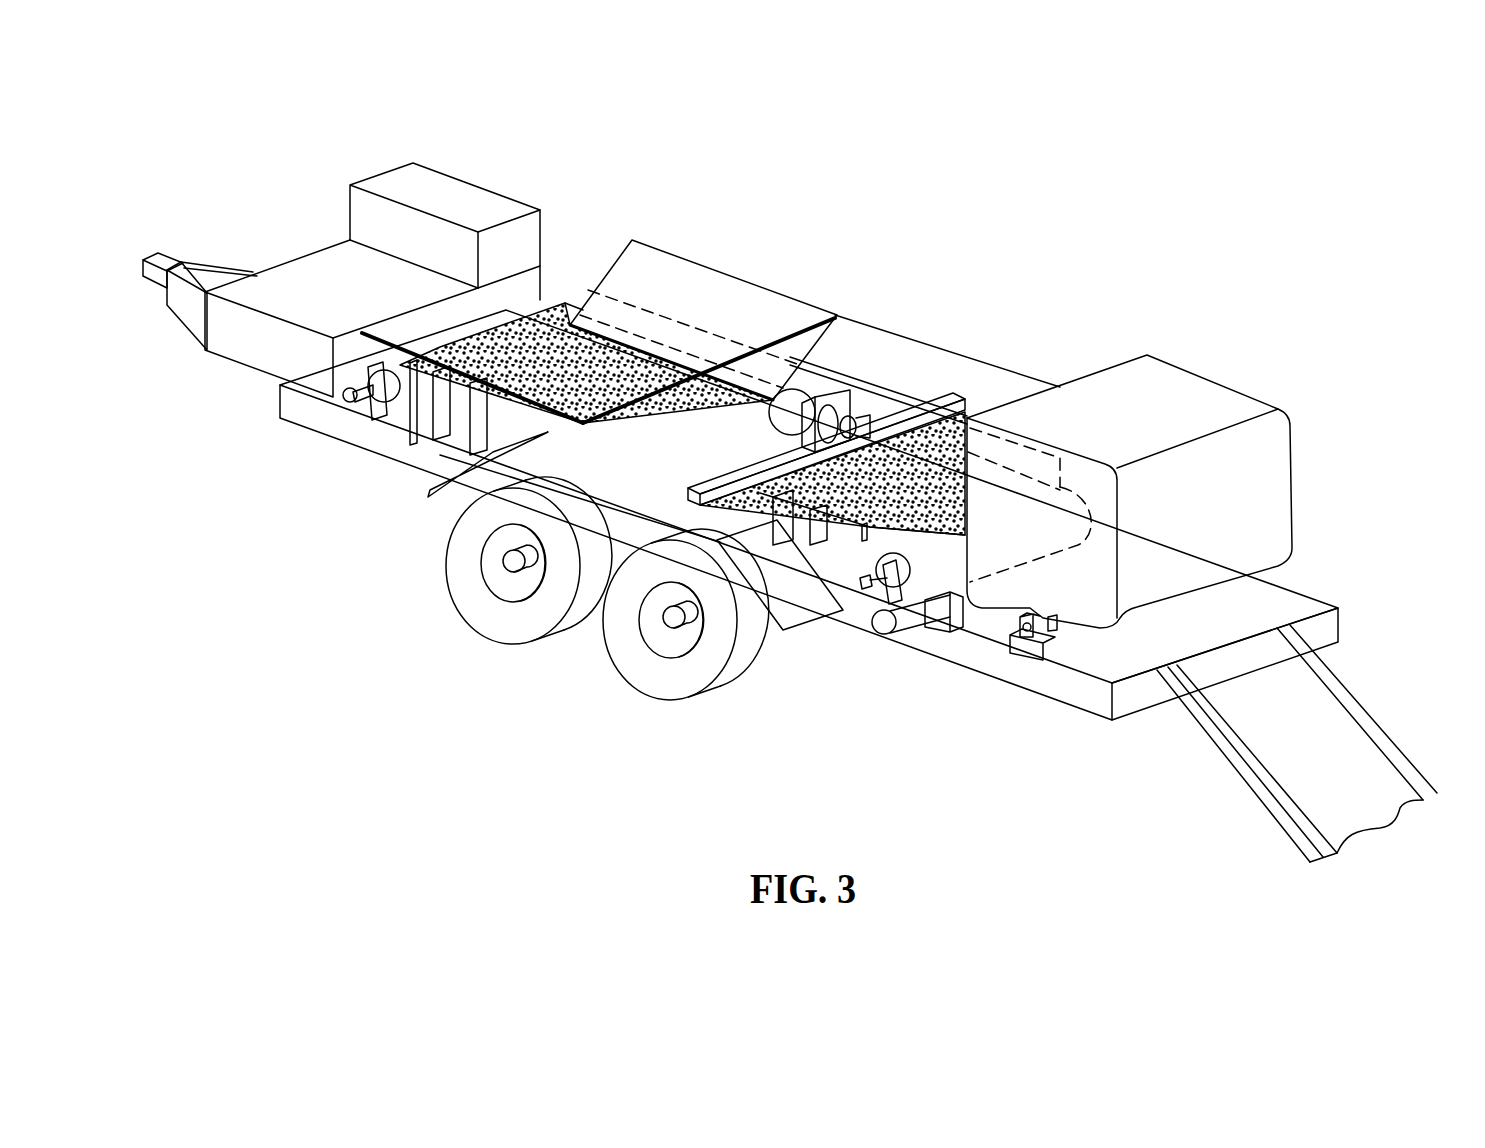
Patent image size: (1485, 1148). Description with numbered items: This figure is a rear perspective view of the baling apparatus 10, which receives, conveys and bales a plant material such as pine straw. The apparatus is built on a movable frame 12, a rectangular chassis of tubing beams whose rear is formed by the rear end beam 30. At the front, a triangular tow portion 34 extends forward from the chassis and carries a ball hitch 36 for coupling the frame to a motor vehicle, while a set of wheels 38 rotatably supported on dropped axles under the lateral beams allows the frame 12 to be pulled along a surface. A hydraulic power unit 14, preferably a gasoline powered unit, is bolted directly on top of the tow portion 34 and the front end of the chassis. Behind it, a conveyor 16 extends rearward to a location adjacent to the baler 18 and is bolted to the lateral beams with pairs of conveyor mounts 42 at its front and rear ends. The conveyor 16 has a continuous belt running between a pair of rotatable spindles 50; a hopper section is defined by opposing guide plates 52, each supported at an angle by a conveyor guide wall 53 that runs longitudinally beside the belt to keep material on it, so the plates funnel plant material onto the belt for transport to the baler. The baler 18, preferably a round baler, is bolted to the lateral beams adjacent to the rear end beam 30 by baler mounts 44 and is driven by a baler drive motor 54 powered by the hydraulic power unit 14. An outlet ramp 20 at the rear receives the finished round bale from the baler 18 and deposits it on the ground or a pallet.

The baling apparatus 10 is at (906, 168).
The movable frame 12 is at (280, 397).
The hydraulic power unit 14 is at (358, 303).
The conveyor 16 is at (617, 358).
The baler 18 is at (1214, 523).
The outlet ramp 20 is at (1308, 747).
The rear end beam 30 is at (1132, 698).
The tow portion 34 is at (187, 310).
The ball hitch 36 is at (163, 260).
The wheels 38 is at (503, 628).
The conveyor mounts 42 is at (368, 405).
The baler mounts 44 is at (1027, 648).
The spindles 50 is at (350, 395).
The guide plates 52 is at (714, 311).
The conveyor guide wall 53 is at (500, 417).
The baler drive motor 54 is at (827, 367).